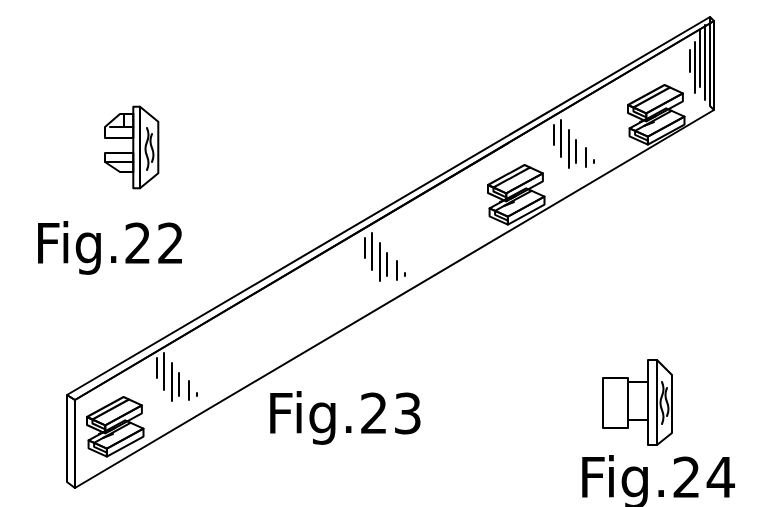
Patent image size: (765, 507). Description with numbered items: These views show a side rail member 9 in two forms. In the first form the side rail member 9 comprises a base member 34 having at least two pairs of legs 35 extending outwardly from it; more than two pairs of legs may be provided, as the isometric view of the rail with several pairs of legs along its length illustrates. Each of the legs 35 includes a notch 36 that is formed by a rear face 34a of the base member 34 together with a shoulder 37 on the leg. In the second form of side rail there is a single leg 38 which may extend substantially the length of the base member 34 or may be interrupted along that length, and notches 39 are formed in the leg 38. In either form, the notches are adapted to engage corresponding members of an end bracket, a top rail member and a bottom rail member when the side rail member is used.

In FIG. 22, the side rail member 9 is at (174, 130).
In FIG. 23, the side rail member 9 is at (439, 288).
In FIG. 24, the base member 34 is at (672, 388).
In FIG. 22, the rear face 34a is at (127, 176).
In FIG. 23, the rear face 34a is at (488, 175).
In FIG. 22, the legs 35 is at (108, 160).
In FIG. 23, the legs 35 is at (505, 225).
In FIG. 22, the notch 36 is at (130, 114).
In FIG. 23, the notch 36 is at (522, 170).
In FIG. 22, the shoulder 37 is at (117, 127).
In FIG. 23, the shoulder 37 is at (505, 177).
In FIG. 24, the single leg 38 is at (603, 388).
In FIG. 24, the notches 39 is at (637, 382).